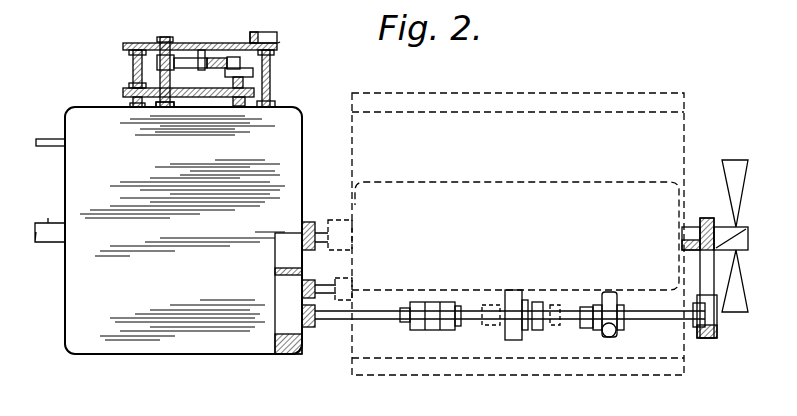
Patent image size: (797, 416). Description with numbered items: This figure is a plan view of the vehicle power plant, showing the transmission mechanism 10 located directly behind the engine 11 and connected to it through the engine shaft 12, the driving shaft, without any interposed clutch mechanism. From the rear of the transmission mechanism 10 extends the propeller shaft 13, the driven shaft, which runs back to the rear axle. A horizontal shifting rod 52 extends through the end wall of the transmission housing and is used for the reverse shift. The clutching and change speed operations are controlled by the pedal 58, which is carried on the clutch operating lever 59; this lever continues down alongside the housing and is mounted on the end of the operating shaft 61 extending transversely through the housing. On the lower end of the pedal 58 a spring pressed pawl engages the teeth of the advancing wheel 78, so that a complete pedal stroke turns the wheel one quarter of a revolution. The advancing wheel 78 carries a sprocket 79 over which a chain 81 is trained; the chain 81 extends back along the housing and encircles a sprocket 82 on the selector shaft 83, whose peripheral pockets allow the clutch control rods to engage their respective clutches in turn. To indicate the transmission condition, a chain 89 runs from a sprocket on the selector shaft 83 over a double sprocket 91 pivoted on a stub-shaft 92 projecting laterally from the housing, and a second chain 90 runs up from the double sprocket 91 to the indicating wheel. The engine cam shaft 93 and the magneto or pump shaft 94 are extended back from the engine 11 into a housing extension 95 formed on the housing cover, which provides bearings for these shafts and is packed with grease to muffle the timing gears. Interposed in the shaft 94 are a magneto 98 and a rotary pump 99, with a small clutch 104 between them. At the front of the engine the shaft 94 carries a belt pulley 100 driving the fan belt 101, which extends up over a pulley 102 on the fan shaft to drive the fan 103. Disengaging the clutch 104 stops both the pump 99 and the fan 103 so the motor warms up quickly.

The transmission mechanism 10 is at (192, 358).
The engine 11 is at (537, 181).
The engine shaft 12 is at (322, 232).
The propeller shaft 13 is at (48, 222).
The horizontal shifting rod 52 is at (49, 138).
The pedal 58 is at (200, 56).
The clutch operating lever 59 is at (183, 60).
The operating shaft 61 is at (172, 70).
The advancing wheel 78 is at (253, 73).
The sprocket 79 is at (257, 93).
The chain 81 is at (213, 100).
The sprocket 82 is at (131, 90).
The selector shaft 83 is at (133, 62).
The chain 89 is at (228, 43).
The chain 90 is at (272, 33).
The double sprocket 91 is at (279, 42).
The stub-shaft 92 is at (272, 63).
The engine cam shaft 93 is at (329, 285).
The magneto or pump shaft 94 is at (332, 321).
The housing extension 95 is at (290, 292).
The magneto 98 is at (433, 302).
The rotary pump 99 is at (610, 292).
The belt pulley 100 is at (717, 336).
The fan belt 101 is at (707, 265).
The pulley 102 is at (700, 222).
The fan 103 is at (734, 180).
The small clutch 104 is at (517, 291).